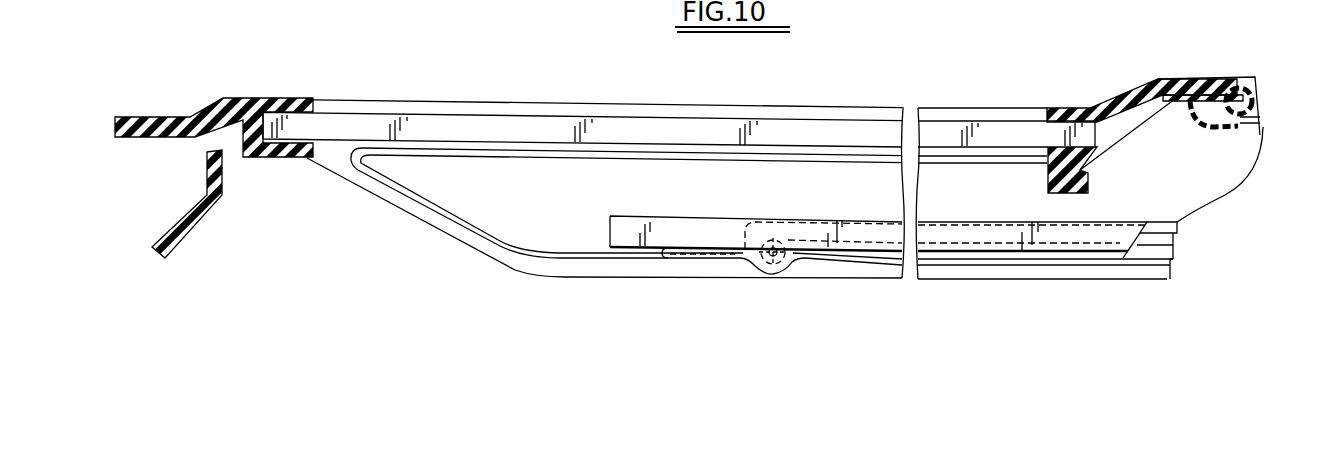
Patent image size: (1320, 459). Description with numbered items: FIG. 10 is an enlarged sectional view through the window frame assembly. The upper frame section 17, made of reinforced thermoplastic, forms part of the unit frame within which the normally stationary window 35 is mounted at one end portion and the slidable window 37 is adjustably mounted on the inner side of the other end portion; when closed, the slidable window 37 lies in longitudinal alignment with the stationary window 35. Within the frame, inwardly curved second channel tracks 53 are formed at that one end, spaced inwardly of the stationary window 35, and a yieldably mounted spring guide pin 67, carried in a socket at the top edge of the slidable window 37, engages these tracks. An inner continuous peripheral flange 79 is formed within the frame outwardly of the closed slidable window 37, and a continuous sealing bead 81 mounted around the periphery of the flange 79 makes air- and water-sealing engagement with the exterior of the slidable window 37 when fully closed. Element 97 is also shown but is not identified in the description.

The upper frame section 17 is at (425, 233).
The stationary window 35 is at (930, 135).
The slidable window 37 is at (654, 226).
The second channel track 53 is at (1152, 255).
The second guide pin 67 is at (777, 275).
The inner continuous peripheral flange 79 is at (165, 118).
The continuous sealing bead 81 is at (1235, 80).
The flange 97 is at (184, 236).